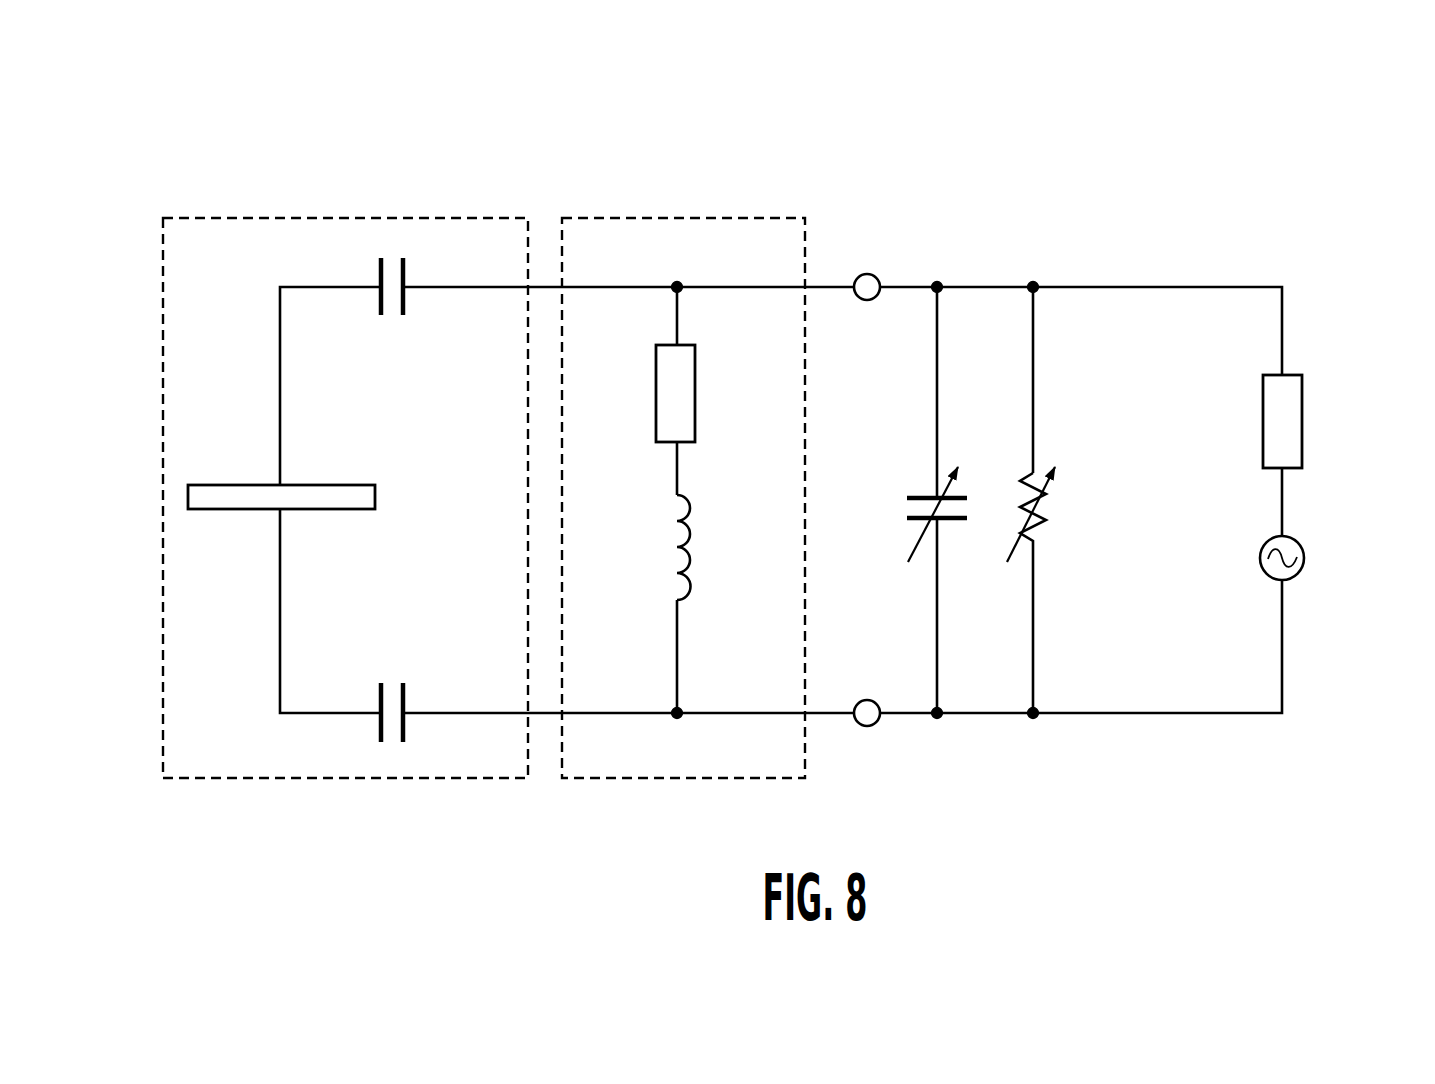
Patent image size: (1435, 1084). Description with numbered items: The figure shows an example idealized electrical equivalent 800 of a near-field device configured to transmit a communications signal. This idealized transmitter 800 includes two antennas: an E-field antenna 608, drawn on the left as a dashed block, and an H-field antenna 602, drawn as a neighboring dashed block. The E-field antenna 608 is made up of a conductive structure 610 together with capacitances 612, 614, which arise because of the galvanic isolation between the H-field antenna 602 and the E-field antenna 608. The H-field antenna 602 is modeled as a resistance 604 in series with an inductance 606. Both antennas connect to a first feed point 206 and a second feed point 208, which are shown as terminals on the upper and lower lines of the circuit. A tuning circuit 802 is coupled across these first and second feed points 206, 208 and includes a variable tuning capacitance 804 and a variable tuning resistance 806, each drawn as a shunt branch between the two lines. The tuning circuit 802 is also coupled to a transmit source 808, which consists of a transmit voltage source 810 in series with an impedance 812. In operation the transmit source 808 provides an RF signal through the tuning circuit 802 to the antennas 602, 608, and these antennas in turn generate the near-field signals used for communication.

The idealized electrical equivalent 800 is at (200, 137).
The E-field antenna 608 is at (312, 218).
The H-field antenna 602 is at (679, 218).
The conductive structure 610 is at (348, 485).
The capacitance 612 is at (405, 302).
The capacitance 614 is at (405, 698).
The resistance 604 is at (697, 402).
The inductance 606 is at (676, 557).
The first feed point 206 is at (866, 274).
The second feed point 208 is at (868, 727).
The tuning circuit 802 is at (1072, 275).
The variable tuning capacitance 804 is at (918, 498).
The variable tuning resistance 806 is at (1048, 504).
The transmit source 808 is at (1372, 272).
The transmit voltage source 810 is at (1306, 558).
The impedance 812 is at (1304, 403).